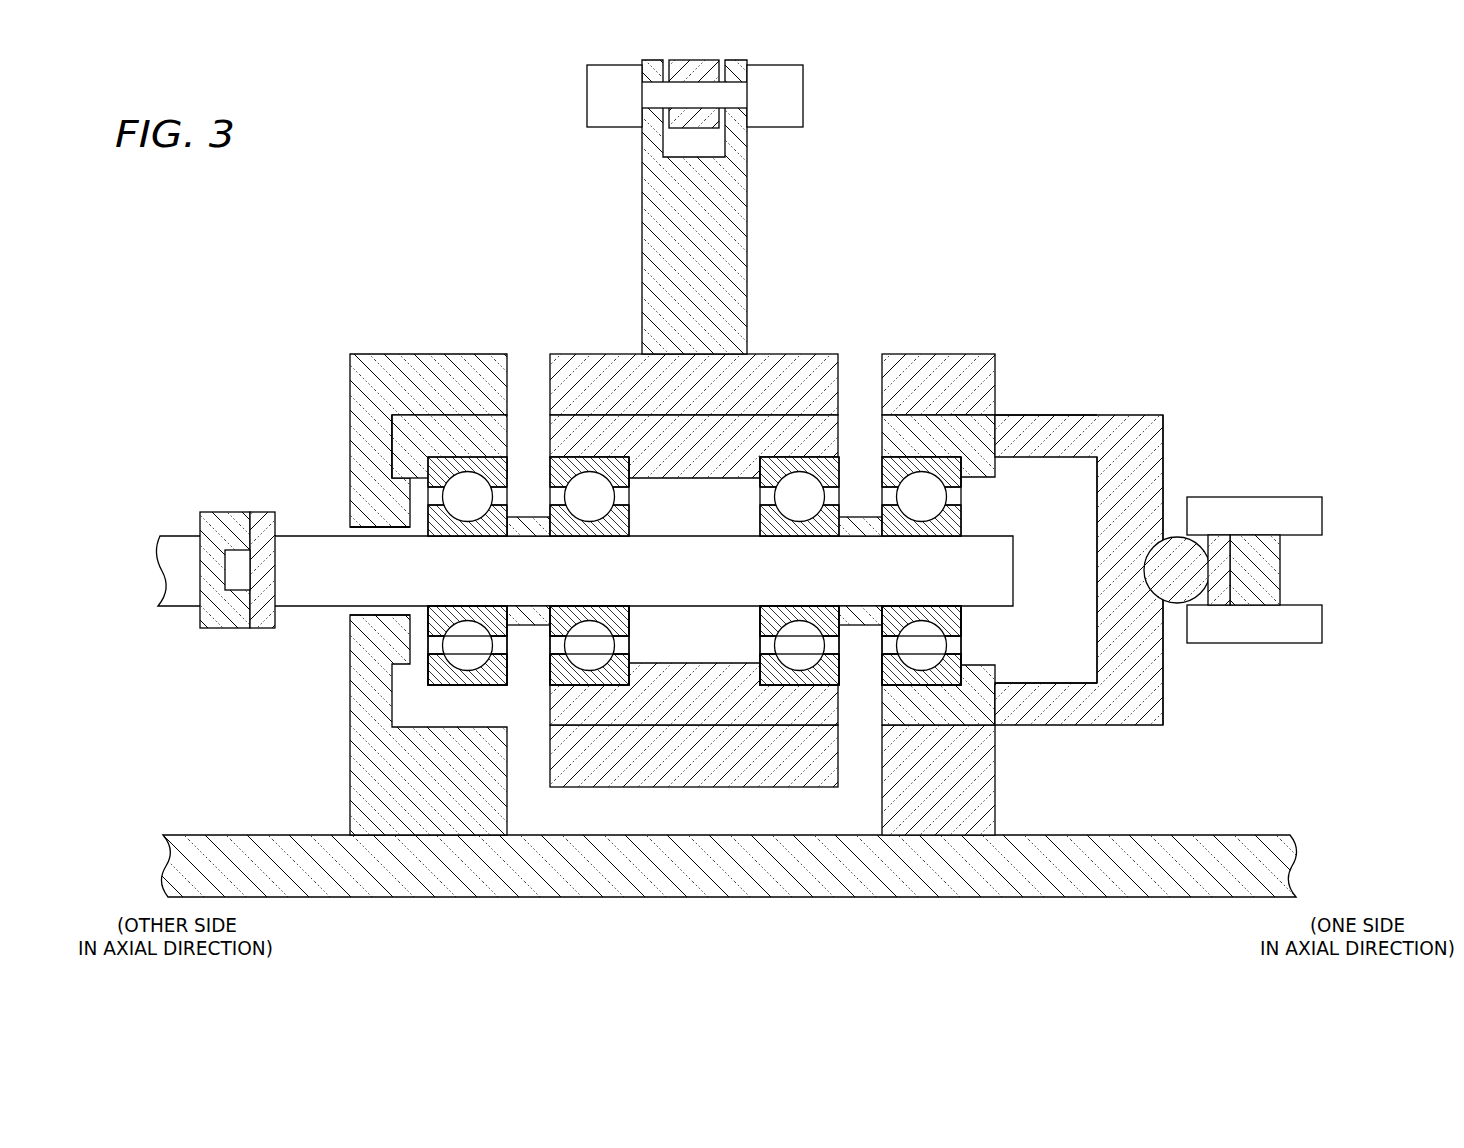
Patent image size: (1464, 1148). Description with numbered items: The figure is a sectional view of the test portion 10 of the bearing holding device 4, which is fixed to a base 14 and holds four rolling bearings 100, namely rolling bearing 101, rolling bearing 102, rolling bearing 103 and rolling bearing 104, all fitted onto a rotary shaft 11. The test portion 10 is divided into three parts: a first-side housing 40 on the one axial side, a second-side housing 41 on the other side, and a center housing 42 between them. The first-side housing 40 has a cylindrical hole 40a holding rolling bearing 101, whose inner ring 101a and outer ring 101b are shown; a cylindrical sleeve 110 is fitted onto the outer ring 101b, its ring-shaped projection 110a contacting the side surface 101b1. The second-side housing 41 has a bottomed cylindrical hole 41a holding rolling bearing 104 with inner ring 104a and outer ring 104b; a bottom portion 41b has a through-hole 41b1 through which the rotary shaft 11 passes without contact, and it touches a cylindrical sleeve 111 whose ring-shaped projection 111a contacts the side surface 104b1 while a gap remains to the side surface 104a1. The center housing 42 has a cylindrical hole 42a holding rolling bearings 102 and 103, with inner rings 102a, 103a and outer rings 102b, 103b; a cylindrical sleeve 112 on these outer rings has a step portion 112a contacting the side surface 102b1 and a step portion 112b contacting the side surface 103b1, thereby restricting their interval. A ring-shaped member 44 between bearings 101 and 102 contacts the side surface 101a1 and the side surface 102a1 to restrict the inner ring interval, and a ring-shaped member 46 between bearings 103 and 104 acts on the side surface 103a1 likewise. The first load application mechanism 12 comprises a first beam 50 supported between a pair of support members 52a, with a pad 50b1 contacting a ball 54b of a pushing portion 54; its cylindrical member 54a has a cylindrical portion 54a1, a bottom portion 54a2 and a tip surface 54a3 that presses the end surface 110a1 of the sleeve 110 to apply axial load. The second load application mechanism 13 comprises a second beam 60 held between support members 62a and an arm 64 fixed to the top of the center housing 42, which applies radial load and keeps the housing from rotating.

The bearing holding device 4 is at (1033, 160).
The test portion 10 is at (859, 253).
The rotary shaft 11 is at (1013, 590).
The first load application mechanism 12 is at (1224, 378).
The second load application mechanism 13 is at (836, 74).
The base 14 is at (1168, 847).
The first-side housing 40 is at (926, 351).
The cylindrical hole 40a is at (958, 416).
The second-side housing 41 is at (346, 371).
The cylindrical hole 41a is at (414, 414).
The bottom portion 41b is at (363, 500).
The through-hole 41b1 is at (383, 529).
The center housing 42 is at (546, 370).
The cylindrical hole 42a is at (701, 424).
The ring-shaped member 44 is at (857, 520).
The ring-shaped member 46 is at (530, 520).
The first beam 50 is at (1265, 568).
The pad 50b1 is at (1216, 548).
The support members 52a is at (1312, 513).
The pushing portion 54 is at (1168, 713).
The cylindrical member 54a is at (1160, 448).
The cylindrical portion 54a1 is at (1068, 435).
The bottom portion 54a2 is at (1097, 588).
The tip surface 54a3 is at (998, 722).
The ball 54b is at (1190, 590).
The second beam 60 is at (694, 72).
The support members 62a is at (600, 119).
The arm 64 is at (655, 198).
The rolling bearings 100 is at (701, 709).
The rolling bearing 101 is at (945, 692).
The inner ring 101a is at (945, 628).
The side surface 101a1 is at (884, 620).
The outer ring 101b is at (900, 628).
The side surface 101b1 is at (963, 482).
The rolling bearing 102 is at (773, 692).
The inner ring 102a is at (760, 620).
The side surface 102a1 is at (832, 628).
The outer ring 102b is at (760, 680).
The side surface 102b1 is at (762, 462).
The rolling bearing 103 is at (600, 692).
The inner ring 103a is at (630, 616).
The side surface 103a1 is at (560, 628).
The outer ring 103b is at (630, 676).
The side surface 103b1 is at (628, 462).
The rolling bearing 104 is at (426, 692).
The inner ring 104a is at (491, 640).
The side surface 104a1 is at (428, 616).
The outer ring 104b is at (447, 625).
The side surface 104b1 is at (428, 672).
The cylindrical sleeve 110 is at (917, 405).
The ring-shaped projection 110a is at (978, 462).
The end surface 110a1 is at (996, 700).
The cylindrical sleeve 111 is at (390, 436).
The ring-shaped projection 111a is at (392, 470).
The cylindrical sleeve 112 is at (695, 482).
The step portion 112a is at (754, 460).
The step portion 112b is at (634, 460).